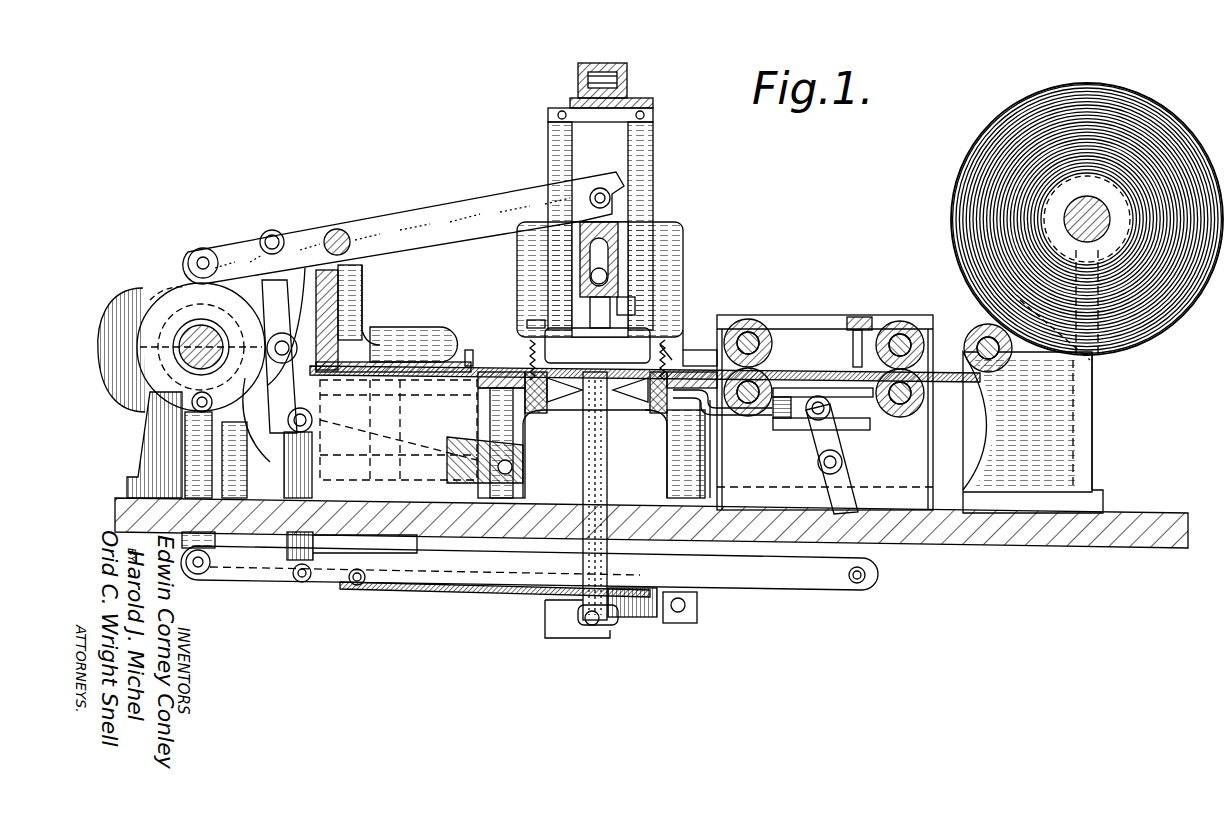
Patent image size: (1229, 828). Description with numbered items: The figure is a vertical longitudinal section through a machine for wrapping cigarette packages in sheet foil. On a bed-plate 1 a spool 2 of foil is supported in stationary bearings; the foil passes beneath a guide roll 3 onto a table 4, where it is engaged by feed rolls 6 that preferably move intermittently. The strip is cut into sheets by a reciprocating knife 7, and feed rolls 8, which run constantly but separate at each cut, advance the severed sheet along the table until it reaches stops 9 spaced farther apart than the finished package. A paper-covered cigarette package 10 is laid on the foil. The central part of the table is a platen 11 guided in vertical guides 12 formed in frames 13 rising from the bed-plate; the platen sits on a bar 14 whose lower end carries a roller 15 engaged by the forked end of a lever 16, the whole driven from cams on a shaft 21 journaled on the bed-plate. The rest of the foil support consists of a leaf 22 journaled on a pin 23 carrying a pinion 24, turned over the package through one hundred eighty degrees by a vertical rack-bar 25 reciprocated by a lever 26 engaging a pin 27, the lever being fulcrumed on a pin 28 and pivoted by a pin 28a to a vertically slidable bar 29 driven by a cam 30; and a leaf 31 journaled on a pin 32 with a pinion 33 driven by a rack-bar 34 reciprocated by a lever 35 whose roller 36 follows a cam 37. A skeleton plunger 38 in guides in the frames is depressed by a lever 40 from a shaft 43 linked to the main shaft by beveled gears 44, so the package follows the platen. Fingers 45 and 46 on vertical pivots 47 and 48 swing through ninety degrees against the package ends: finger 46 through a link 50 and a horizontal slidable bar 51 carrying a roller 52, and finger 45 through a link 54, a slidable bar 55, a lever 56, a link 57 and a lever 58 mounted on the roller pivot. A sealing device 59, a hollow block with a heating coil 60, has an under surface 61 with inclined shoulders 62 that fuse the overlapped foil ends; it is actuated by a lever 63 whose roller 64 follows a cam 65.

The bed-plate 1 is at (950, 532).
The spool 2 is at (962, 180).
The guide roll 3 is at (972, 333).
The table 4 is at (966, 382).
The feed rolls 6 is at (900, 322).
The reciprocating knife 7 is at (858, 317).
The feed rolls 8 is at (752, 320).
The stops 9 is at (468, 345).
The cigarette package 10 is at (657, 350).
The platen 11 is at (550, 438).
The vertical guides 12 is at (540, 413).
The frames 13 is at (524, 452).
The bar 14 is at (608, 470).
The roller 15 is at (594, 627).
The lever 16 is at (556, 630).
The shaft 21 is at (185, 355).
The leaf 22 is at (710, 362).
The pin or shaft 23 is at (690, 330).
The pinion 24 is at (672, 350).
The vertical rack-bar 25 is at (700, 470).
The lever 26 is at (640, 612).
The pin 27 is at (698, 605).
The pin 28 is at (350, 597).
The pin 28a is at (215, 568).
The vertically slidable bar 29 is at (216, 540).
The cam 30 is at (267, 438).
The leaf 31 is at (490, 366).
The pin 32 is at (531, 329).
The pinion 33 is at (548, 356).
The vertical rack-bar 34 is at (502, 443).
The lever 35 is at (472, 469).
The anti-friction roller 36 is at (198, 455).
The cam 37 is at (162, 290).
The plunger 38 is at (650, 146).
The lever 40 is at (603, 63).
The shaft 43 is at (405, 327).
The beveled gears 44 is at (275, 305).
The finger 45 is at (624, 400).
The finger 46 is at (578, 396).
The vertical pivot 47 is at (686, 454).
The vertical pivot 48 is at (501, 443).
The link 50 is at (480, 392).
The horizontal slidable bar 51 is at (398, 430).
The roller 52 is at (345, 292).
The link 54 is at (720, 410).
The horizontal slidable bar 55 is at (806, 418).
The lever 56 is at (848, 482).
The link 57 is at (780, 585).
The lever 58 is at (314, 545).
The sealing device 59 is at (612, 236).
The heating coil 60 is at (614, 262).
The under surface 61 is at (630, 309).
The shoulders 62 is at (598, 312).
The lever 63 is at (400, 222).
The anti-friction roller 64 is at (198, 252).
The cam 65 is at (118, 318).